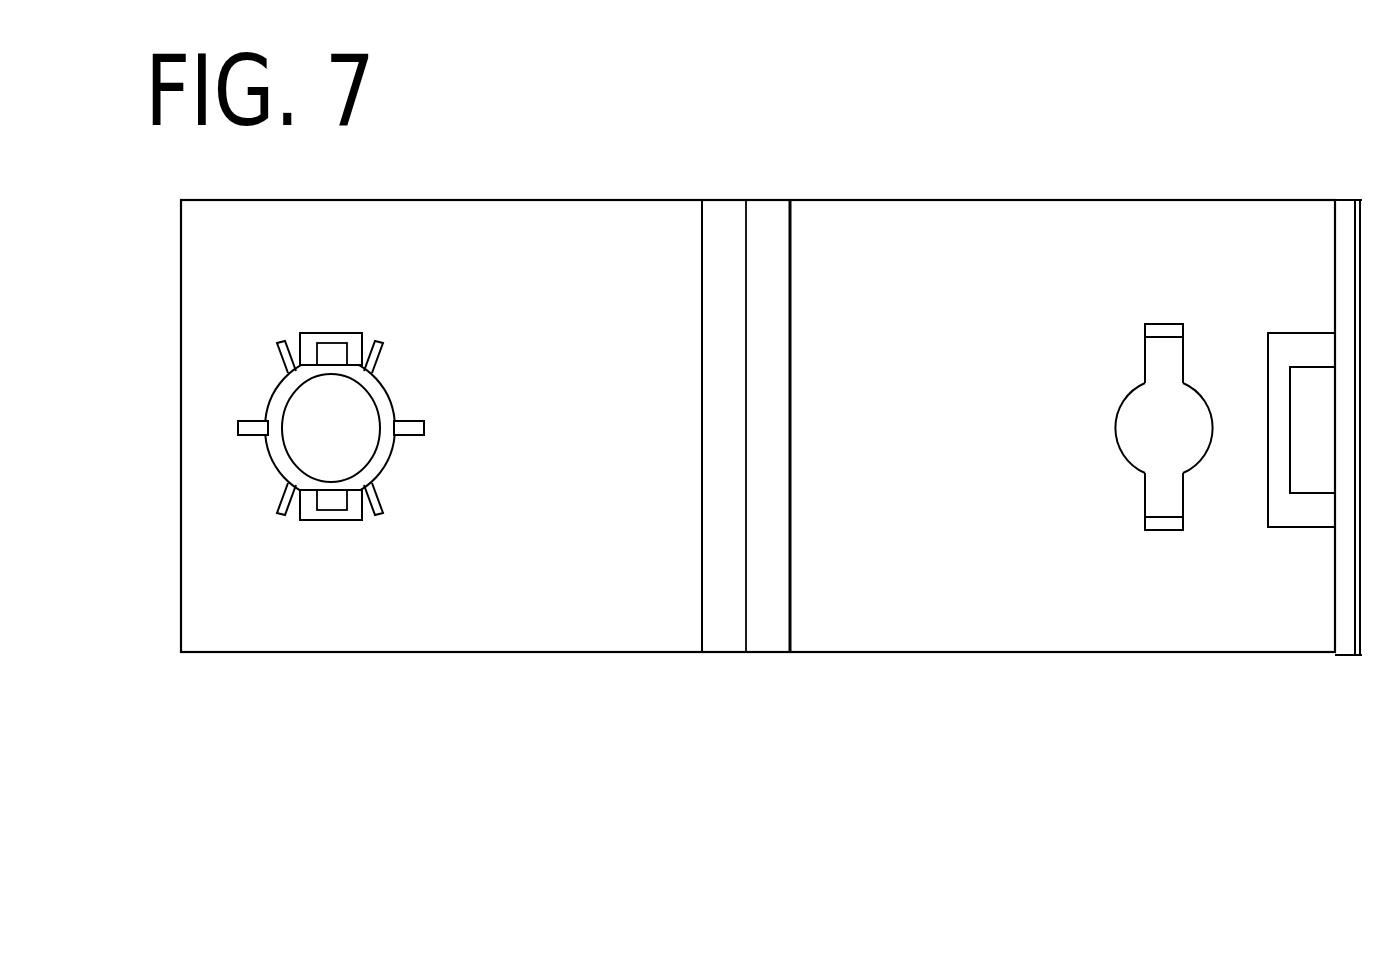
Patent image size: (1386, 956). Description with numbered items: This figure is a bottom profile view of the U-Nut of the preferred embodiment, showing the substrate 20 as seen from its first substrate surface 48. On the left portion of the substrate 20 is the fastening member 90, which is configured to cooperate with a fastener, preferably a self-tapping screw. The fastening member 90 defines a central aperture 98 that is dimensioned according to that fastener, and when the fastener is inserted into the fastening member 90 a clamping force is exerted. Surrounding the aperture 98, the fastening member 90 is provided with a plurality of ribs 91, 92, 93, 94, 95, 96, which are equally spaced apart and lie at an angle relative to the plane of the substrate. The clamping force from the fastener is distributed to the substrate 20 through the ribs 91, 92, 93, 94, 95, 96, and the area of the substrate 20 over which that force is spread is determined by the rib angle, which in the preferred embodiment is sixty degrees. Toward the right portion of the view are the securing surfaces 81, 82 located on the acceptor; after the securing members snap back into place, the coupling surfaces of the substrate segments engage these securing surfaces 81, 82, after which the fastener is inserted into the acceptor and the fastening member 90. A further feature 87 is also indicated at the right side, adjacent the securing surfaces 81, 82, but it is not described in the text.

The substrate 20 is at (851, 690).
The first substrate surface 48 is at (1018, 285).
The securing surface 81 is at (1162, 530).
The securing surface 82 is at (1162, 333).
The bracket recess 87 is at (1315, 479).
The fastening member 90 is at (338, 459).
The rib 91 is at (377, 340).
The rib 92 is at (412, 429).
The rib 93 is at (378, 512).
The rib 94 is at (282, 512).
The rib 95 is at (250, 429).
The rib 96 is at (284, 340).
The aperture 98 is at (331, 450).